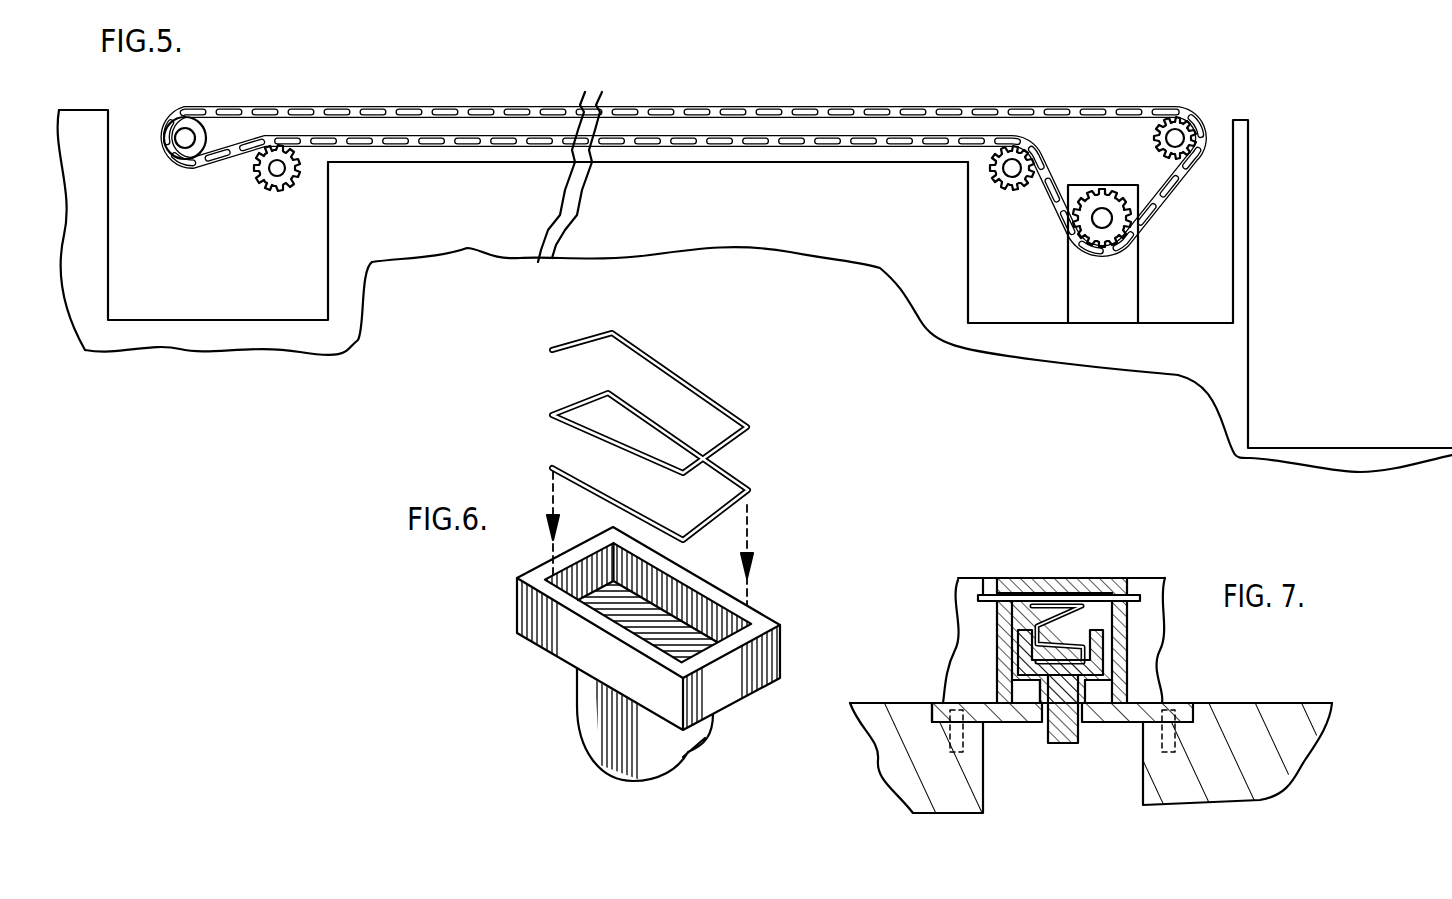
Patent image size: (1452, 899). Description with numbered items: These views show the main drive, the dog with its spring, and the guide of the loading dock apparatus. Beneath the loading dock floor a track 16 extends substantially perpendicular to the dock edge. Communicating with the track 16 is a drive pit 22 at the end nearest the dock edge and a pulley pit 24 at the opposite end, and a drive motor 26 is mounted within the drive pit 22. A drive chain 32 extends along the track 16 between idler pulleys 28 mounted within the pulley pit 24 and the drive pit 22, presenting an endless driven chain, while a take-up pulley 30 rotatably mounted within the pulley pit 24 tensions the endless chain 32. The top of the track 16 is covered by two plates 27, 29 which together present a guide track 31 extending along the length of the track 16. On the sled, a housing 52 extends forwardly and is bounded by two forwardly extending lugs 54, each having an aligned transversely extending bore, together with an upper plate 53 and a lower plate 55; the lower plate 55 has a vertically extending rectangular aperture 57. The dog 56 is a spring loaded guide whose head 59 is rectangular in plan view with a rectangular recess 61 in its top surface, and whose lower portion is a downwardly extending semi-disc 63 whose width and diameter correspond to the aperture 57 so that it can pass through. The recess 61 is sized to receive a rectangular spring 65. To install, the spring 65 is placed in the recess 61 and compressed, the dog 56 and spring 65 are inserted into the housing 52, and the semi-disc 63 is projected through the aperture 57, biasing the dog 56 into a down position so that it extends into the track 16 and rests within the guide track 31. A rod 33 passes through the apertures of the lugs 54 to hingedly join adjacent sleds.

In FIG. 5, the track 16 is at (677, 164).
In FIG. 7, the track 16 is at (1091, 722).
In FIG. 5, the drive pit 22 is at (1177, 325).
In FIG. 5, the pulley pit 24 is at (333, 213).
In FIG. 5, the drive motor 26 is at (1140, 278).
In FIG. 5, the idler pulleys 28 is at (210, 137).
In FIG. 5, the take-up pulley 30 is at (265, 186).
In FIG. 5, the drive chain 32 is at (900, 105).
In FIG. 7, the plate 27 is at (1187, 705).
In FIG. 7, the plate 29 is at (932, 703).
In FIG. 7, the guide track 31 is at (1035, 722).
In FIG. 7, the rod 33 is at (983, 596).
In FIG. 7, the housing 52 is at (1049, 644).
In FIG. 7, the upper plate 53 is at (1047, 578).
In FIG. 7, the forwardly extending lugs 54 is at (995, 645).
In FIG. 7, the lower plate 55 is at (1103, 722).
In FIG. 6, the dog 56 is at (625, 654).
In FIG. 7, the dog 56 is at (1112, 662).
In FIG. 7, the rectangular aperture 57 is at (1040, 685).
In FIG. 6, the head 59 is at (518, 600).
In FIG. 6, the rectangular recess 61 is at (575, 620).
In FIG. 6, the semi-disc 63 is at (705, 752).
In FIG. 6, the rectangular spring 65 is at (733, 472).
In FIG. 7, the rectangular spring 65 is at (993, 617).